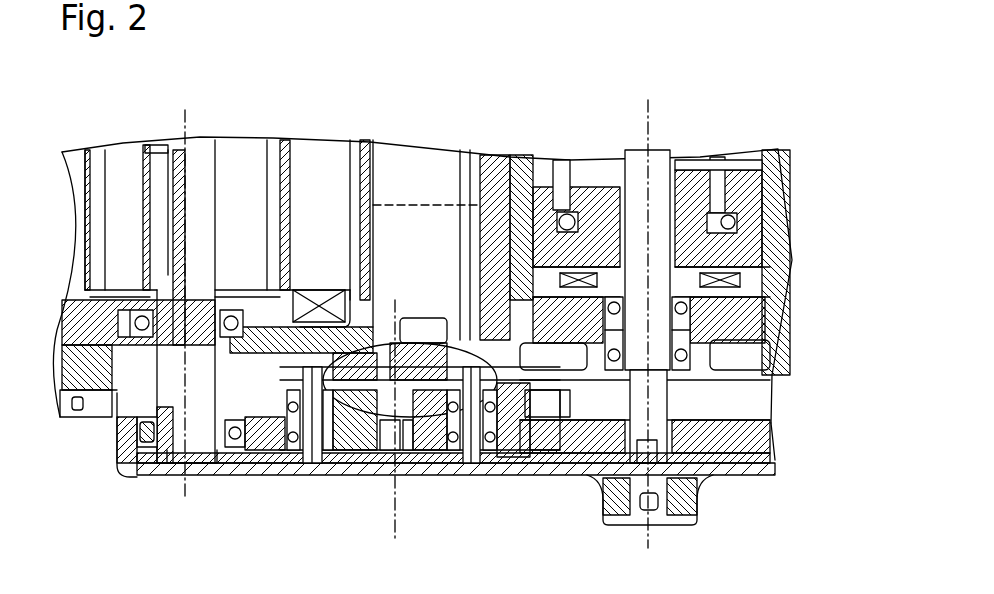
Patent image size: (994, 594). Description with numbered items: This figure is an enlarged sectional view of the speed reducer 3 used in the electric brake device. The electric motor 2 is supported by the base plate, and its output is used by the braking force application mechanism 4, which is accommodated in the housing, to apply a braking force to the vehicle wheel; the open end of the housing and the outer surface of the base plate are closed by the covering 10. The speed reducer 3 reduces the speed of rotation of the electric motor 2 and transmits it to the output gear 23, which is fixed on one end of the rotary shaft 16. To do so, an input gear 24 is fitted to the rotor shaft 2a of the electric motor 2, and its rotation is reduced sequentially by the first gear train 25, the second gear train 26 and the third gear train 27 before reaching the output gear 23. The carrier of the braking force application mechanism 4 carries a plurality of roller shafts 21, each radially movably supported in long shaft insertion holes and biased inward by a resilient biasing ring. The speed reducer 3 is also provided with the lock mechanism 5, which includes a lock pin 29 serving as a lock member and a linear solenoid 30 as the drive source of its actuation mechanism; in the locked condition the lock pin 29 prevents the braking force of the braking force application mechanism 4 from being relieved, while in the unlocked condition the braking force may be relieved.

The electric motor 2 is at (250, 147).
The rotor shaft 2a is at (200, 147).
The speed reducer 3 is at (335, 500).
The braking force application mechanism 4 is at (749, 387).
The lock mechanism 5 is at (400, 437).
The covering 10 is at (680, 483).
The rotary shaft 16 is at (637, 170).
The roller shaft 21 is at (722, 150).
The output gear 23 is at (727, 440).
The input gear 24 is at (158, 440).
The first gear train 25 is at (228, 457).
The second gear train 26 is at (377, 468).
The third gear train 27 is at (537, 455).
The lock pin 29 is at (420, 452).
The linear solenoid 30 is at (420, 215).